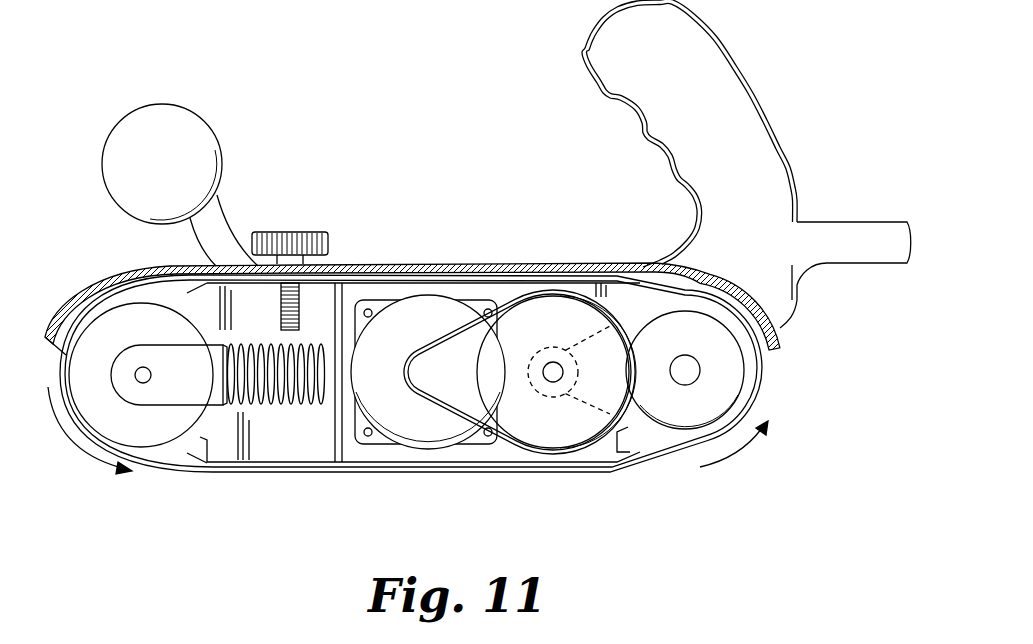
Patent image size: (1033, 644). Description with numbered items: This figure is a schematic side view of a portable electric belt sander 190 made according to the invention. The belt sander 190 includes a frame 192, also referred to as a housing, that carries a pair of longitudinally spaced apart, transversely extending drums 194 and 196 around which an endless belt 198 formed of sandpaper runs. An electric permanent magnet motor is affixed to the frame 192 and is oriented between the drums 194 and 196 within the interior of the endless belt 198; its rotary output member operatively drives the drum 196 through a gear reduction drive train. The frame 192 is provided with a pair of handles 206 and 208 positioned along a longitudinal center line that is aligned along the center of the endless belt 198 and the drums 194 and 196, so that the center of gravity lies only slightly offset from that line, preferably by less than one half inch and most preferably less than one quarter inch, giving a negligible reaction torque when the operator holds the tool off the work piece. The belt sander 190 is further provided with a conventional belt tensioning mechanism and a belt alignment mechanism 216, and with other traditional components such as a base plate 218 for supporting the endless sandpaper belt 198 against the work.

The portable electric belt sander 190 is at (466, 110).
The frame 192 is at (497, 265).
The drum 194 is at (157, 449).
The drum 196 is at (688, 424).
The endless belt 198 is at (650, 460).
The handle 206 is at (733, 63).
The handle 208 is at (200, 118).
The belt alignment mechanism 216 is at (307, 232).
The base plate 218 is at (362, 467).